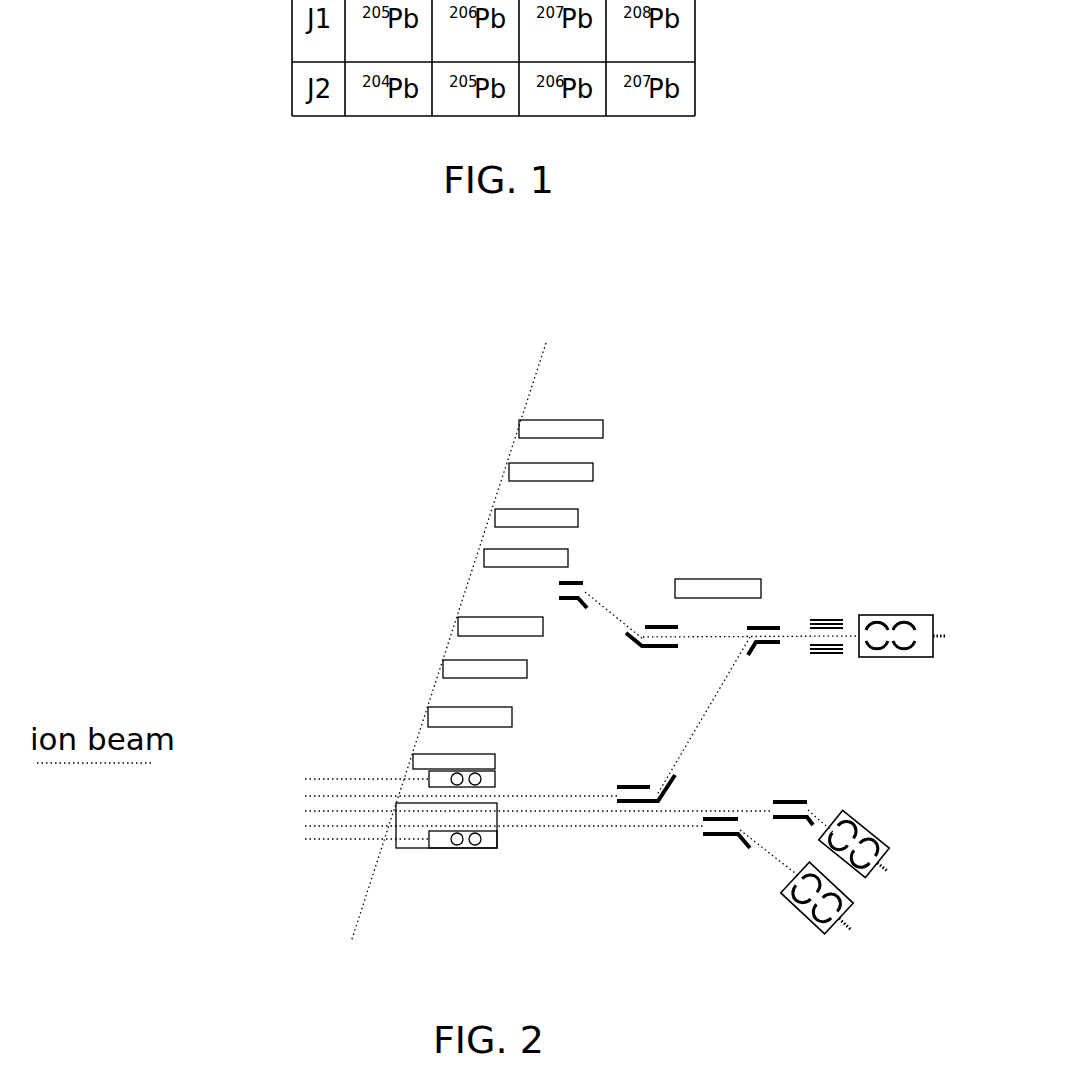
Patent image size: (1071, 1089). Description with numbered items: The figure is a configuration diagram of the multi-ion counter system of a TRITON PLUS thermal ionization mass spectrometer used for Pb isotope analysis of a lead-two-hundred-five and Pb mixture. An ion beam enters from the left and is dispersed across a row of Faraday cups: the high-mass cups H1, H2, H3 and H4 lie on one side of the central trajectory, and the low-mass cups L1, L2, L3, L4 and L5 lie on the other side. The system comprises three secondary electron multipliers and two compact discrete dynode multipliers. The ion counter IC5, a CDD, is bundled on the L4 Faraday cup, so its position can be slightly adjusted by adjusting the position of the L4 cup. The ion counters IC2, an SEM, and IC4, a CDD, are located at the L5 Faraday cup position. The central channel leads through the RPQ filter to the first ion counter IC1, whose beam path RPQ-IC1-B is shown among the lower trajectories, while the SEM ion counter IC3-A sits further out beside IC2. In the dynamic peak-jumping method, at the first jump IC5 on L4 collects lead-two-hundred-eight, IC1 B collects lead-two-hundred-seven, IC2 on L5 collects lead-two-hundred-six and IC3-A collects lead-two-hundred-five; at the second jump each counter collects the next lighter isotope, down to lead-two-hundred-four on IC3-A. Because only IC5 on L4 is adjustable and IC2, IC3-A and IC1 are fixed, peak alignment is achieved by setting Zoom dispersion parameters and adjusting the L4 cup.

The H1 Faraday cup H1 is at (548, 560).
The H2 Faraday cup H2 is at (560, 520).
The H3 Faraday cup H3 is at (576, 474).
The H4 Faraday cup H4 is at (586, 431).
The L1 Faraday cup L1 is at (516, 628).
The L2 Faraday cup L2 is at (500, 670).
The L3 Faraday cup L3 is at (487, 719).
The L4 Faraday cup L4 is at (469, 762).
The L5 Faraday cup L5 is at (446, 840).
The first ion counter IC1 is at (675, 592).
The second ion counter IC2 is at (867, 848).
The third ion counter IC3-A is at (813, 897).
The fourth ion counter IC4 is at (481, 841).
The fifth ion counter IC5 is at (481, 781).
The RPQ IC1-B ion counter path RPQ-IC1-B is at (473, 809).